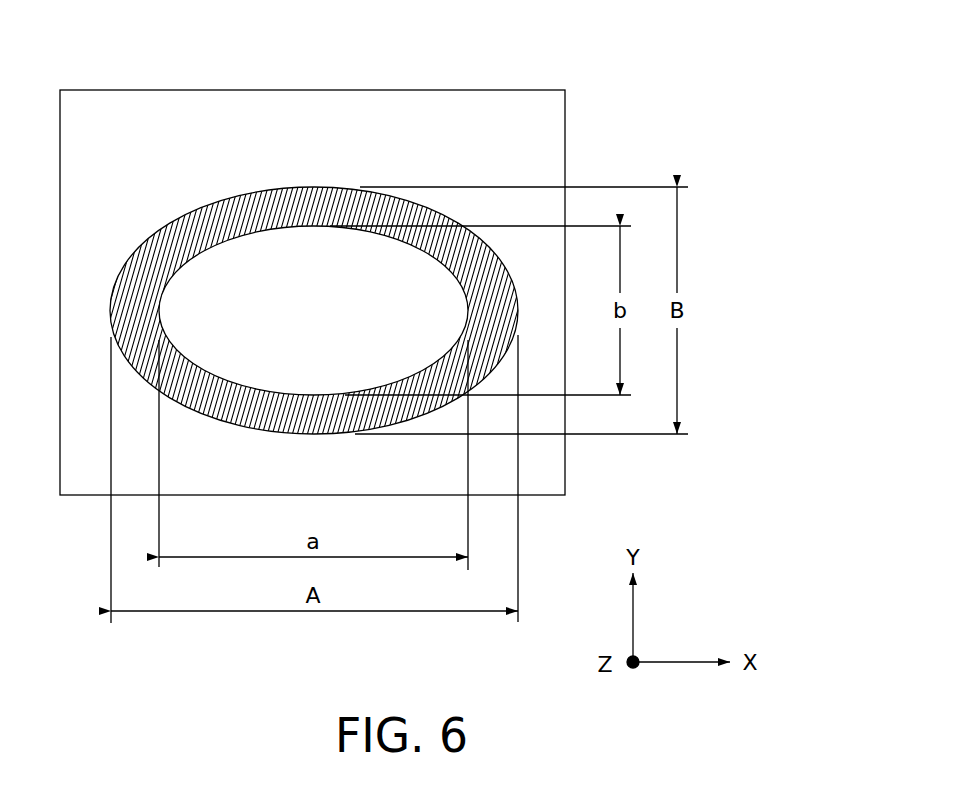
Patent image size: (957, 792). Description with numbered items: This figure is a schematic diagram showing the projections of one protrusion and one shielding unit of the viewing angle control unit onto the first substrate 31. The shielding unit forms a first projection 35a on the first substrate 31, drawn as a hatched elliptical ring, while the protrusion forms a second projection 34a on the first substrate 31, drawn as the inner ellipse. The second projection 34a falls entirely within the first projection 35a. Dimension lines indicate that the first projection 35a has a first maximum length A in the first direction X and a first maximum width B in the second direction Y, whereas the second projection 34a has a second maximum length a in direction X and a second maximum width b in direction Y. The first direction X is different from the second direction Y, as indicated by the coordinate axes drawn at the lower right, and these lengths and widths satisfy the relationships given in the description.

The first substrate 31 is at (547, 131).
The second projection 34a is at (310, 250).
The first projection 35a is at (225, 208).